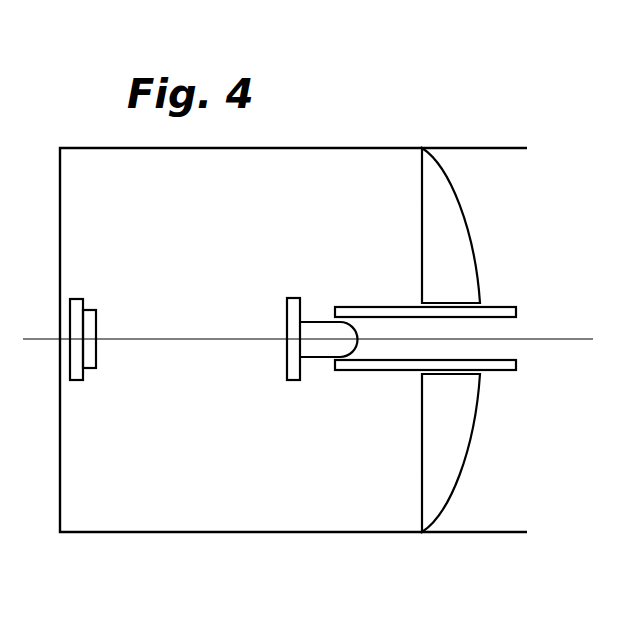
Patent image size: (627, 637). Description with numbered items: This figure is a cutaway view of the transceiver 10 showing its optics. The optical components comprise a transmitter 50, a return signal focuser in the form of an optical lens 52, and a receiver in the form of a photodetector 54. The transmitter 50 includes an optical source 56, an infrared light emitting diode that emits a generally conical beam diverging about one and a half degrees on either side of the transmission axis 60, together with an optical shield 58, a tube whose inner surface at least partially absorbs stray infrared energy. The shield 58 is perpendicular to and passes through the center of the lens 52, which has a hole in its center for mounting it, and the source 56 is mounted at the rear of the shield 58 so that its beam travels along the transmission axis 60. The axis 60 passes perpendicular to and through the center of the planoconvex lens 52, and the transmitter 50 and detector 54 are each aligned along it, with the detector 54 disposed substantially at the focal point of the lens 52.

The transceiver 10 is at (340, 148).
The transmitter 50 is at (390, 282).
The optical lens 52 is at (467, 452).
The photodetector 54 is at (96, 321).
The optical source 56 is at (319, 320).
The optical shield 58 is at (368, 370).
The transmission axis 60 is at (205, 339).